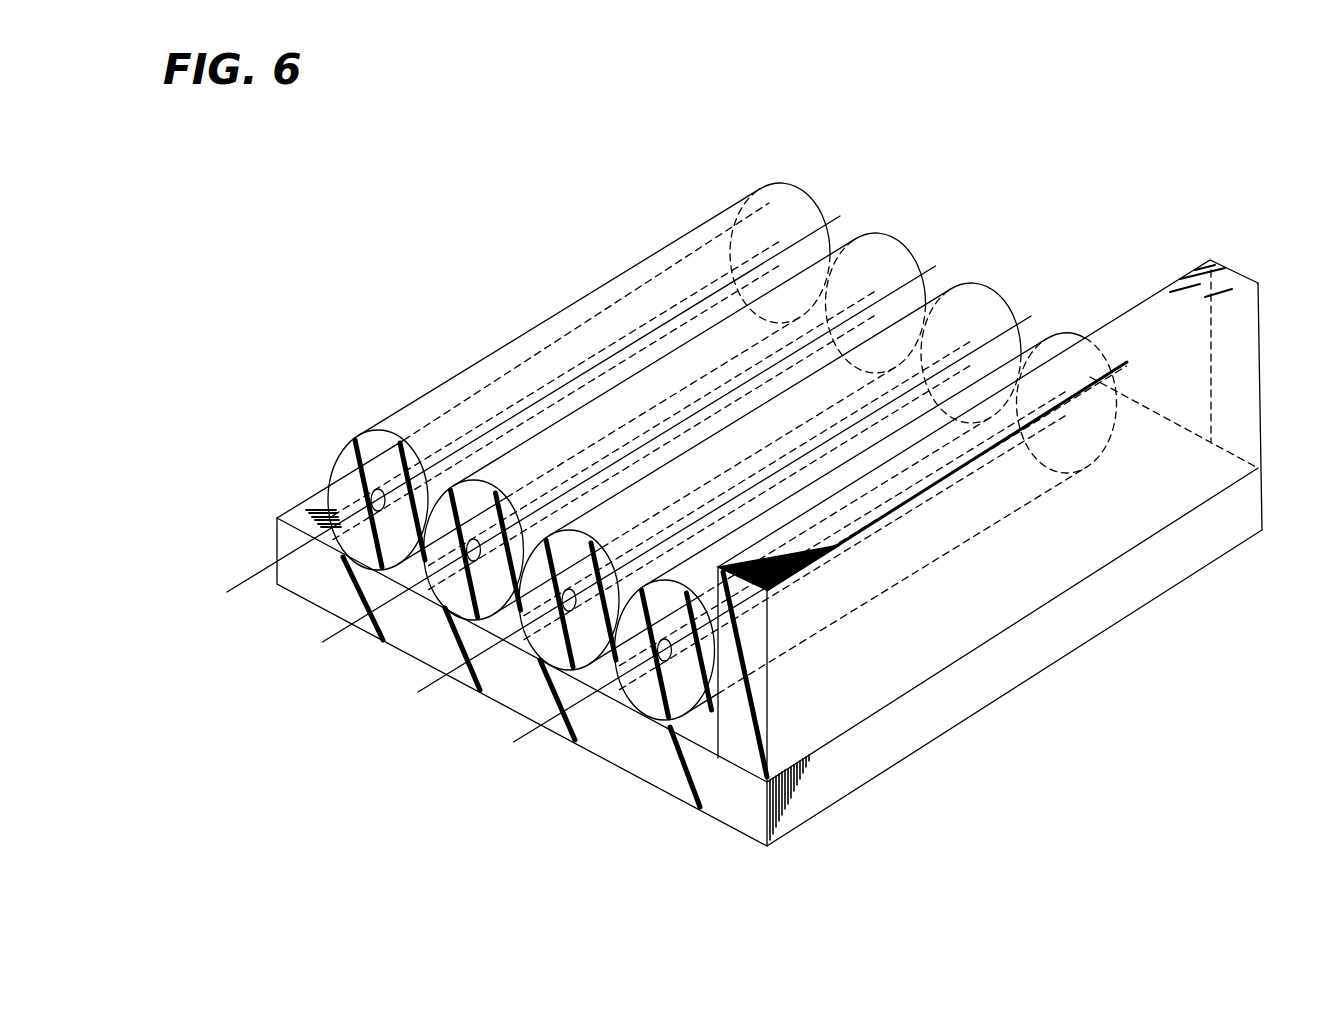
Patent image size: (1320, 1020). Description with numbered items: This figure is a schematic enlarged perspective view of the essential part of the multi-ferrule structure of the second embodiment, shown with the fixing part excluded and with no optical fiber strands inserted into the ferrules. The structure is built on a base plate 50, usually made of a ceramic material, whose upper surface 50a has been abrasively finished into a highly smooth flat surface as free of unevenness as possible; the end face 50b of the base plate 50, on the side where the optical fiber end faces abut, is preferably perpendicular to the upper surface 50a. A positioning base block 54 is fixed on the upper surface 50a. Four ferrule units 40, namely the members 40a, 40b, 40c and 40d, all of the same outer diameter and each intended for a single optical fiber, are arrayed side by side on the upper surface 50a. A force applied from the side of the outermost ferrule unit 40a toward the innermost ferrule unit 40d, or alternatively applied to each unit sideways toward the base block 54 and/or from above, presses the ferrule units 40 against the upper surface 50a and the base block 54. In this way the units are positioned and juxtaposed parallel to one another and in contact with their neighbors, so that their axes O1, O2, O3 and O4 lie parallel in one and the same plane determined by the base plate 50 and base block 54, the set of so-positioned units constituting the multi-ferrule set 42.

The ferrule units 40 is at (1098, 256).
The ferrule unit 40a is at (792, 184).
The ferrule unit 40b is at (876, 234).
The ferrule unit 40c is at (982, 283).
The ferrule unit 40d is at (1058, 332).
The multi-ferrule set 42 is at (452, 372).
The base plate 50 is at (868, 765).
The upper surface 50a is at (300, 520).
The end face 50b is at (737, 805).
The positioning base block 54 is at (1262, 398).
The axis O1 is at (227, 592).
The axis O2 is at (322, 642).
The axis O3 is at (418, 692).
The axis O4 is at (514, 742).